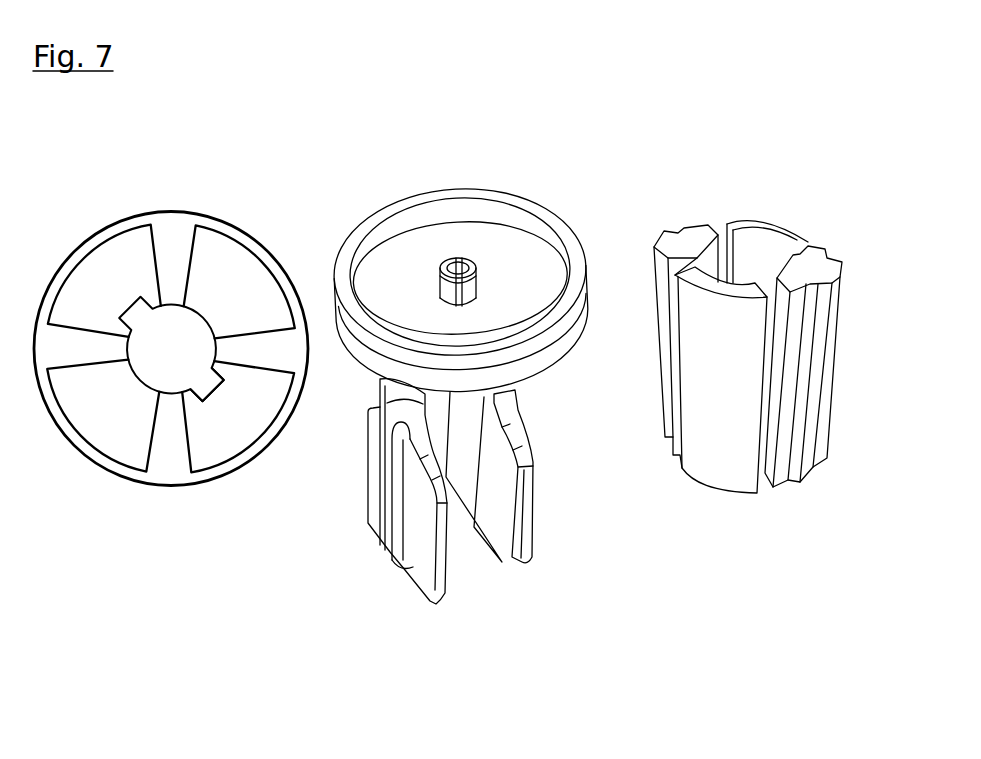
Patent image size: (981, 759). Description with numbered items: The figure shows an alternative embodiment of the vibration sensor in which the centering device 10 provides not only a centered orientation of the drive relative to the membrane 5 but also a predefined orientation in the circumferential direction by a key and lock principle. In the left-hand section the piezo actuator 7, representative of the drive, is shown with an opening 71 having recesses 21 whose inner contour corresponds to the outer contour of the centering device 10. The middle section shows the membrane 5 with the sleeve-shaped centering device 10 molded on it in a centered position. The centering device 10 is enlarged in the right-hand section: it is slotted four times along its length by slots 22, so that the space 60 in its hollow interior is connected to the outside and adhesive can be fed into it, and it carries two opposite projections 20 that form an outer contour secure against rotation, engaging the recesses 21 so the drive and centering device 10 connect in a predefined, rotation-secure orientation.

The piezo actuator 7 is at (171, 339).
The opening 71 is at (173, 335).
The recess 21 is at (202, 401).
The membrane 5 is at (483, 248).
The centering device 10 is at (455, 258).
The projection 20 is at (748, 253).
The slot 22 is at (720, 238).
The space 60 is at (752, 247).